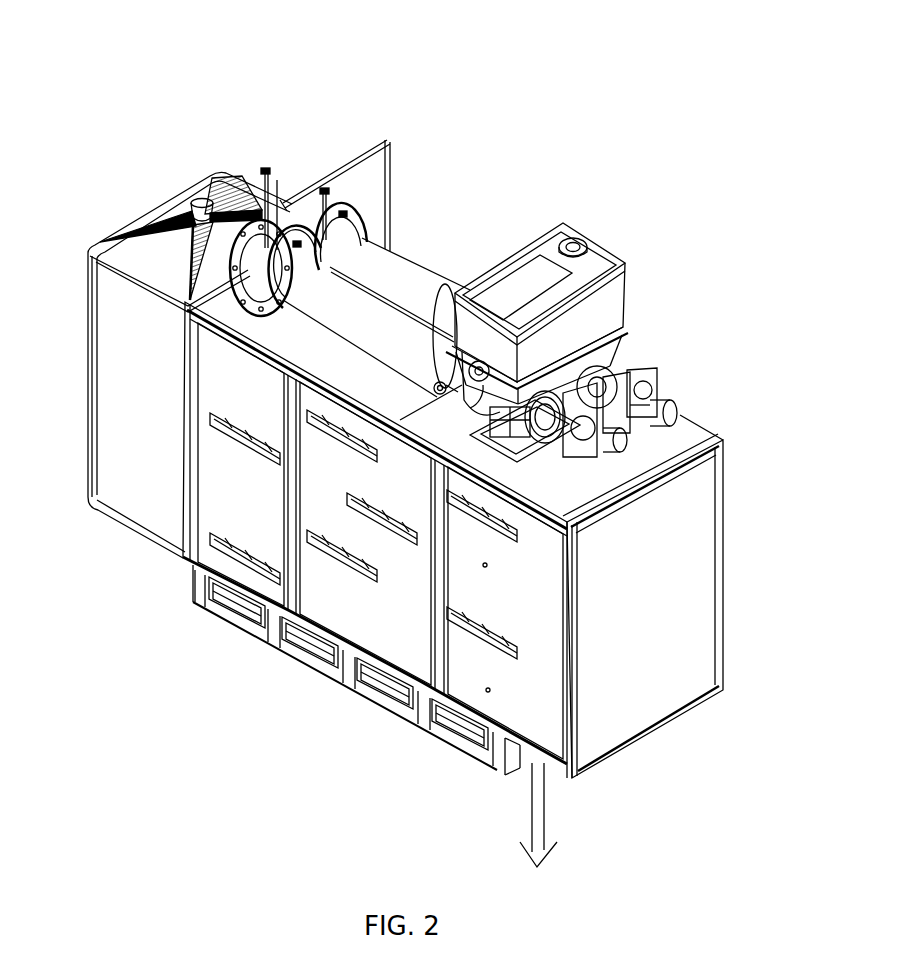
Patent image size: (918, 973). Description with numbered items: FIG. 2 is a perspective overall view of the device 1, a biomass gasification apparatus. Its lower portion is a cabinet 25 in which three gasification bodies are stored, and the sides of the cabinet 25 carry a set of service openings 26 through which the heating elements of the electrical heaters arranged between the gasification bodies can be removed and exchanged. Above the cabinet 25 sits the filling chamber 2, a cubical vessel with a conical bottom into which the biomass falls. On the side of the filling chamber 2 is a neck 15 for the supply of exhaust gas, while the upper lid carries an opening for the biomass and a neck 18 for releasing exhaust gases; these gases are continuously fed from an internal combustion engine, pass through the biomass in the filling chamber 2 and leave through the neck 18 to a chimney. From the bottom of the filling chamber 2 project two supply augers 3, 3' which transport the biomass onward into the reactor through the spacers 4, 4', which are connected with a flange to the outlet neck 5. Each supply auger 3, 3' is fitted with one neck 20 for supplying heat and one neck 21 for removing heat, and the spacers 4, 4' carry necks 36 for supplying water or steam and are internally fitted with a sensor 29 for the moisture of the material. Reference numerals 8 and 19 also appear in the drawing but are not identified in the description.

The device 1 is at (382, 445).
The filling chamber 2 is at (612, 300).
The supply auger 3 is at (376, 268).
The supply auger 3' is at (409, 259).
The spacer 4 is at (283, 183).
The spacer 4' is at (238, 192).
The outlet neck 5 is at (185, 302).
The discharge direction arrow 8 is at (547, 817).
The neck 15 is at (600, 316).
The neck 18 is at (582, 242).
The pump and motor unit 19 is at (626, 326).
The neck 20 is at (437, 330).
The neck 21 is at (363, 213).
The cabinet 25 is at (207, 520).
The service openings 26 is at (343, 563).
The sensor 29 is at (260, 172).
The necks 36 is at (327, 207).